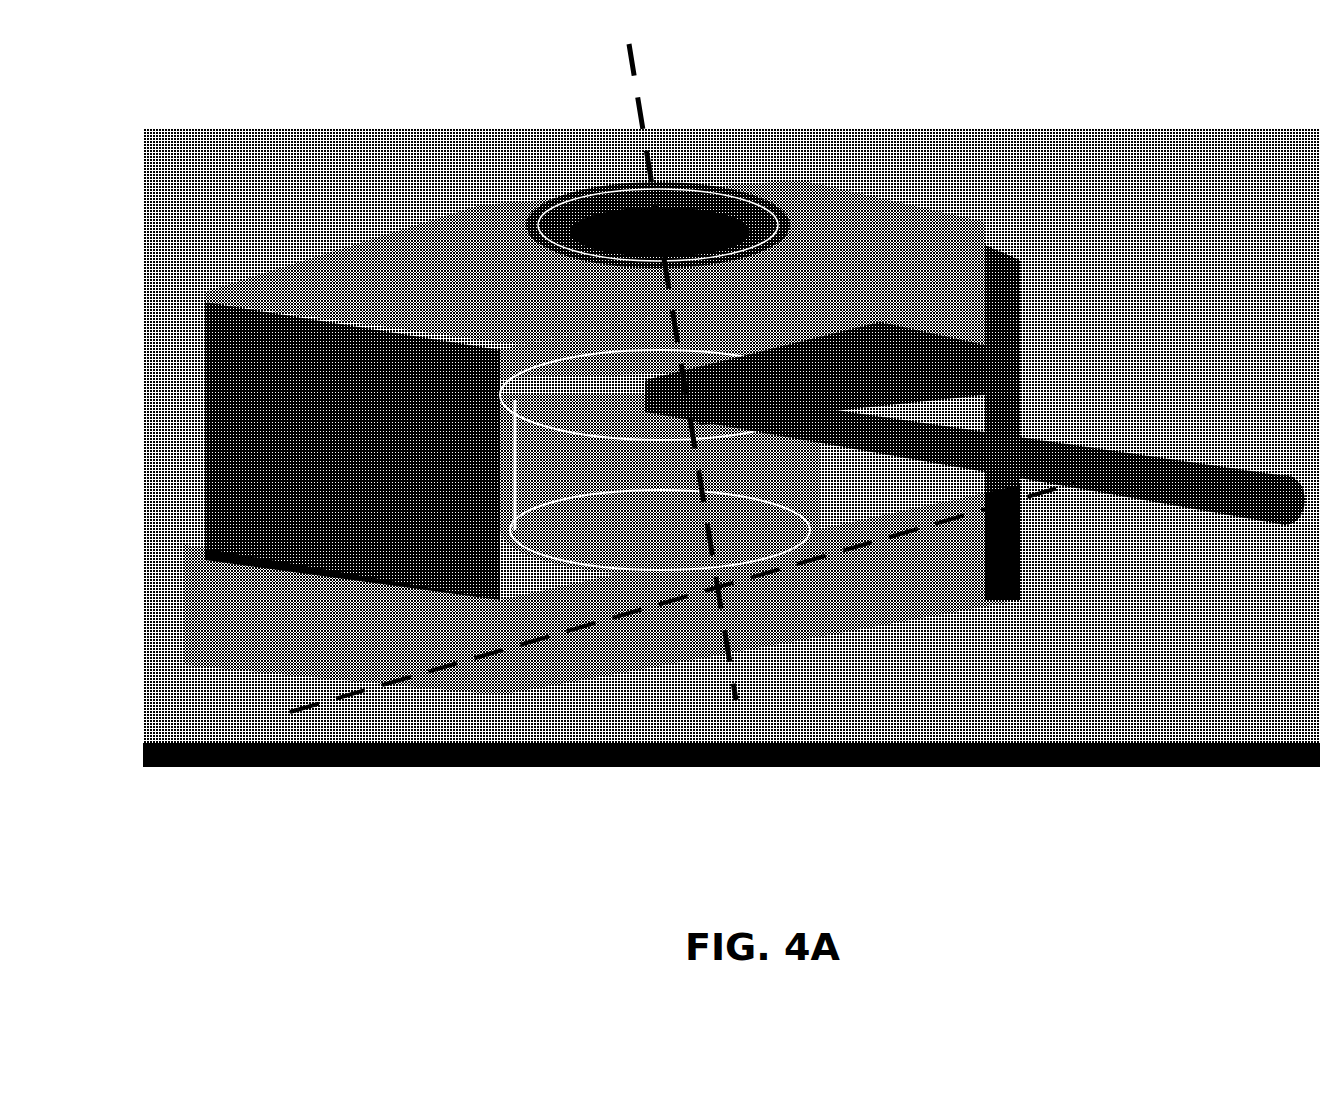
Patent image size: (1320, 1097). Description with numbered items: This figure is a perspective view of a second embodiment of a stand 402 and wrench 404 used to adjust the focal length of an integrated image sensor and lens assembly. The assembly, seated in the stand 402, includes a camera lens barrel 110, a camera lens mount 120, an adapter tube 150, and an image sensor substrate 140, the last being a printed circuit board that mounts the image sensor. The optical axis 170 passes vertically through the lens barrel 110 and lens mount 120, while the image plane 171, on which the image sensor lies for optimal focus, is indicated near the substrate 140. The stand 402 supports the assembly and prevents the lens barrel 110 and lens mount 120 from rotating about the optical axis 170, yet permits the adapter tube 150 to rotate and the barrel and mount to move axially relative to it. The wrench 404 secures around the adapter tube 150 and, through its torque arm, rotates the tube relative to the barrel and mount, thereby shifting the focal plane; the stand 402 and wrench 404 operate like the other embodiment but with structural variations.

The camera lens barrel 110 is at (560, 192).
The camera lens mount 120 is at (762, 497).
The image sensor substrate 140 is at (820, 582).
The adapter tube 150 is at (722, 379).
The optical axis 170 is at (692, 390).
The image plane 171 is at (930, 540).
The stand 402 is at (284, 268).
The wrench 404 is at (1040, 430).